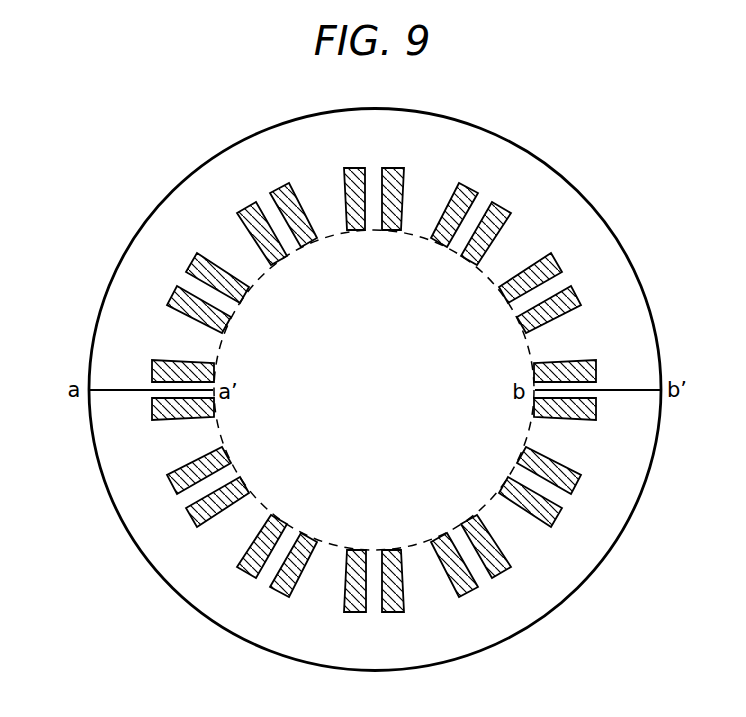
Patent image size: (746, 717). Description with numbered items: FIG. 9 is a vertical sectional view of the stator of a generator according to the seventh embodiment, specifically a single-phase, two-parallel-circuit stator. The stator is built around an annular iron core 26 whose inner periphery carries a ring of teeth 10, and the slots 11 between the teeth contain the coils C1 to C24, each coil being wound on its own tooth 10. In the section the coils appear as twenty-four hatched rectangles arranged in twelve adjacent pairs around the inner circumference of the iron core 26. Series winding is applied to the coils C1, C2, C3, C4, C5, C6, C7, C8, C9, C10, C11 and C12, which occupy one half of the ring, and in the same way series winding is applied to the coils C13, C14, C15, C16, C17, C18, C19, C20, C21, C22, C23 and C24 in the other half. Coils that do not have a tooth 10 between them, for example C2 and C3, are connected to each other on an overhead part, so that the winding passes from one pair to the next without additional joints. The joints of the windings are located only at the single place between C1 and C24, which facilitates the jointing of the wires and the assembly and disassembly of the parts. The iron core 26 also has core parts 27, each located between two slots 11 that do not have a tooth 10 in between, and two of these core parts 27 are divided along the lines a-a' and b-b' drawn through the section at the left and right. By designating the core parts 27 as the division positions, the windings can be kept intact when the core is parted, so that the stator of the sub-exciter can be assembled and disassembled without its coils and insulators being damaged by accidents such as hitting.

The tooth 10 is at (213, 356).
The slot 11 is at (202, 373).
The iron core 26 is at (515, 162).
The core part 27 is at (283, 238).
The coil C1 is at (163, 367).
The coil C2 is at (180, 309).
The coil C3 is at (202, 271).
The coil C4 is at (249, 225).
The coil C5 is at (291, 201).
The coil C6 is at (349, 185).
The coil C7 is at (396, 185).
The coil C8 is at (457, 202).
The coil C9 is at (499, 225).
The coil C10 is at (550, 271).
The coil C11 is at (572, 309).
The coil C12 is at (588, 368).
The coil C13 is at (588, 410).
The coil C14 is at (572, 473).
The coil C15 is at (550, 509).
The coil C16 is at (503, 555).
The coil C17 is at (461, 579).
The coil C18 is at (407, 596).
The coil C19 is at (341, 596).
The coil C20 is at (289, 578).
The coil C21 is at (245, 555).
The coil C22 is at (198, 509).
The coil C23 is at (176, 473).
The coil C24 is at (156, 410).